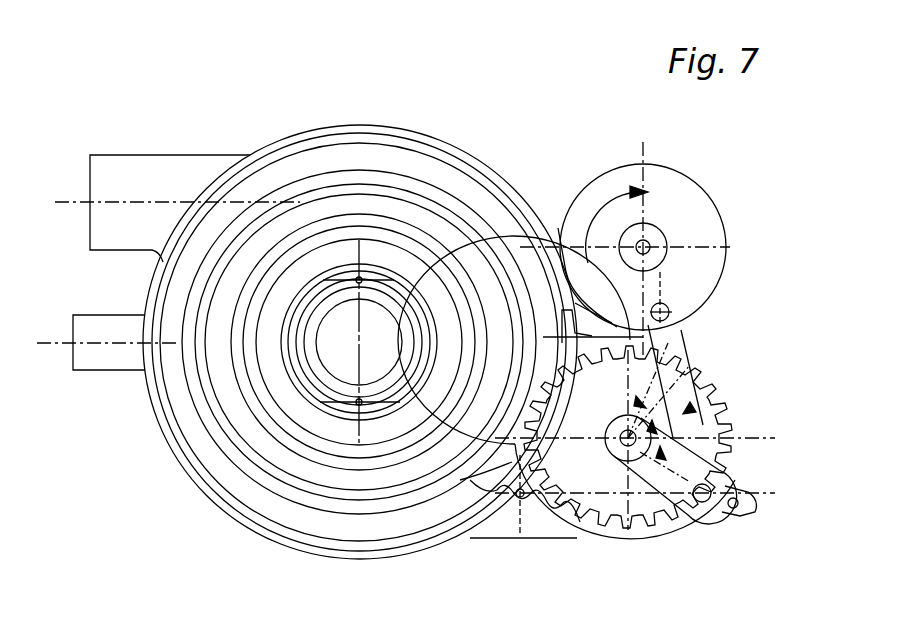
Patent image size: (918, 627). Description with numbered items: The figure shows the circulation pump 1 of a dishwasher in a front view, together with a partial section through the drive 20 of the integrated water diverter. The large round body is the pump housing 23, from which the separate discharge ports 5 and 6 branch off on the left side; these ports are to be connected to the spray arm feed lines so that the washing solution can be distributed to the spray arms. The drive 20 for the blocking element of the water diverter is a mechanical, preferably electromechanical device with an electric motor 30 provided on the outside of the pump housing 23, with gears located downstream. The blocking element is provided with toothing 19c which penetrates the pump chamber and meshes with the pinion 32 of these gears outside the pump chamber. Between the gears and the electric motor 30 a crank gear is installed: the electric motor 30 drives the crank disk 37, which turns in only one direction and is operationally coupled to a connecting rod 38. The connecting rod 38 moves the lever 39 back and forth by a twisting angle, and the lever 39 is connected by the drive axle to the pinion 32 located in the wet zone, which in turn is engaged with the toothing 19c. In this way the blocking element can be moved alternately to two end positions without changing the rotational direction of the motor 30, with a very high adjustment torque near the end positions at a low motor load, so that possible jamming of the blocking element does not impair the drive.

The circulation pump 1 is at (318, 108).
The discharge port 5 is at (95, 155).
The discharge port 6 is at (103, 371).
The pump housing 23 is at (450, 142).
The drive 20 is at (613, 148).
The electric motor 30 is at (718, 213).
The crank disk 37 is at (682, 178).
The pinion 32 is at (613, 487).
The connecting rod 38 is at (685, 412).
The lever 39 is at (677, 477).
The toothing 19c is at (550, 440).